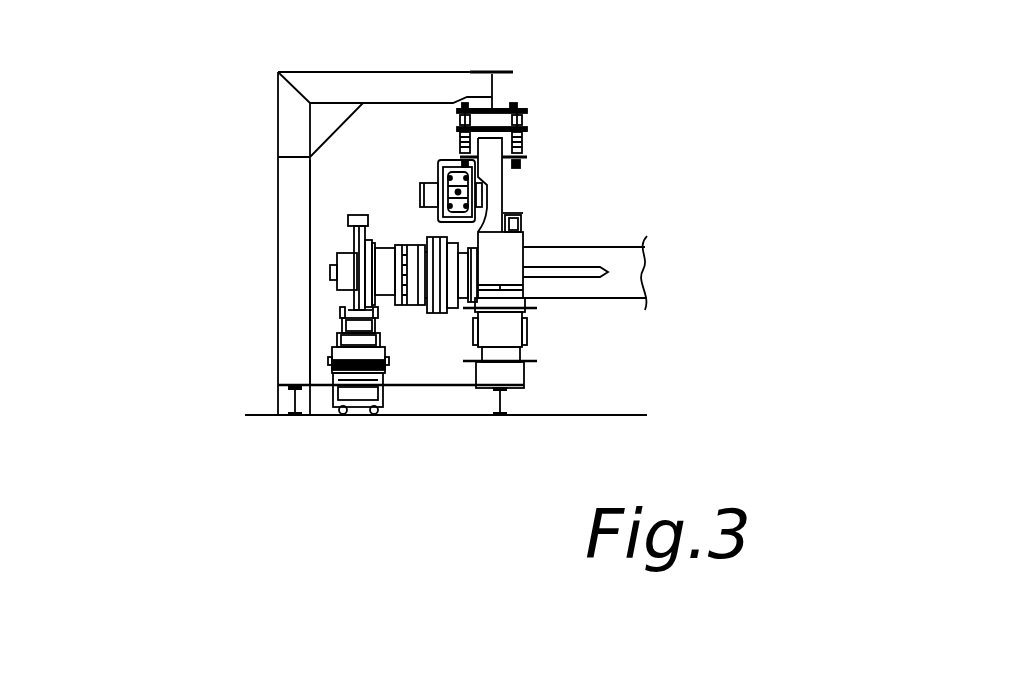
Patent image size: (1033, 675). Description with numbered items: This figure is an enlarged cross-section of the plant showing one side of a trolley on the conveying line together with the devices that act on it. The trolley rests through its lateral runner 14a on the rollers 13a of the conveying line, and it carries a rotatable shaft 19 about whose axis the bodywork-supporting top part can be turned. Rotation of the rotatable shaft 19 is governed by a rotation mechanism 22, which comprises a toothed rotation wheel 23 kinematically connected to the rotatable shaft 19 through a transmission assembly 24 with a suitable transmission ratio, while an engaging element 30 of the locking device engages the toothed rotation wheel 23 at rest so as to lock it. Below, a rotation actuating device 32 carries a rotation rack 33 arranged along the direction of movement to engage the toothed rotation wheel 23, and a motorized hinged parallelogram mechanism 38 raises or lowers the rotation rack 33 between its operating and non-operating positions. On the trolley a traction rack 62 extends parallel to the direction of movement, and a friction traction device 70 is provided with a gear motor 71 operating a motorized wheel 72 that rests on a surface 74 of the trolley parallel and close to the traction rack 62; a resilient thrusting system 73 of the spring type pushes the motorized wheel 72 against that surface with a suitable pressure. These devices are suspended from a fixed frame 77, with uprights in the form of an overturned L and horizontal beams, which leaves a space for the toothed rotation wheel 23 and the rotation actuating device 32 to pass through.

The rollers 13a is at (530, 352).
The lateral runner 14a is at (530, 317).
The rotatable shaft 19 is at (643, 237).
The rotation mechanism 22 is at (306, 302).
The toothed rotation wheel 23 is at (348, 233).
The transmission assembly 24 is at (433, 178).
The engaging element 30 is at (348, 217).
The rotation actuating device 32 is at (322, 376).
The rotation rack 33 is at (340, 320).
The motorized hinged parallelogram mechanism 38 is at (343, 388).
The traction rack 62 is at (520, 218).
The friction traction device 70 is at (560, 100).
The gear motor 71 is at (427, 243).
The motorized wheel 72 is at (500, 203).
The resilient thrusting system 73 is at (453, 113).
The surface 74 is at (502, 212).
The fixed frame 77 is at (273, 179).